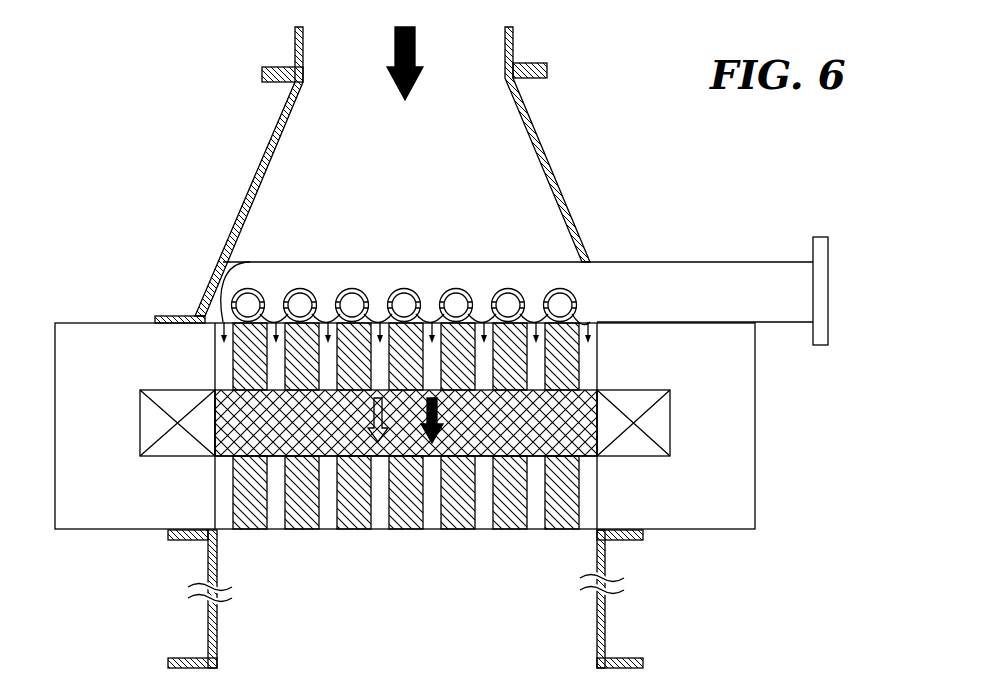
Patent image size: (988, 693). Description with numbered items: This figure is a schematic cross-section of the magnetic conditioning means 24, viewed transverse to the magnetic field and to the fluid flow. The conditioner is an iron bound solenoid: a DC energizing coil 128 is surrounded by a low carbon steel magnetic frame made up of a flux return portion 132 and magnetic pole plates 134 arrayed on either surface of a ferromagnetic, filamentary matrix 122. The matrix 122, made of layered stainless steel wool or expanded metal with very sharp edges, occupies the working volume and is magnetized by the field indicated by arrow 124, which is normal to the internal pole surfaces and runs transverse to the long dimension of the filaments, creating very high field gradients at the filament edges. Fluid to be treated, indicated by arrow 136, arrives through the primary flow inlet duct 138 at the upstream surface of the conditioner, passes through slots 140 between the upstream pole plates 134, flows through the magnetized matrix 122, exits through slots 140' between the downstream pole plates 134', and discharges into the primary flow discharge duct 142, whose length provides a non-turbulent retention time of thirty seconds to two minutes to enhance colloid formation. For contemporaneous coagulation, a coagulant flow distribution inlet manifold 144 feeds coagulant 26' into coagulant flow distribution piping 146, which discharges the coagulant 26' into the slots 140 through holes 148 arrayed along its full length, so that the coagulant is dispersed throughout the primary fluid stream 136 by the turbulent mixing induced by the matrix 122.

The magnetic conditioning means 24 is at (160, 280).
The coagulant 26' is at (554, 269).
The ferromagnetic filamentary matrix 122 is at (212, 440).
The magnetizing field 124 is at (457, 427).
The DC energizing coil 128 is at (140, 430).
The flux return portion 132 is at (72, 323).
The upstream pole plates 134 is at (456, 356).
The downstream pole plates 134' is at (406, 543).
The fluid to be treated 136 is at (415, 43).
The primary flow inlet duct 138 is at (530, 108).
The slots 140 is at (369, 352).
The slots 140' is at (276, 550).
The primary flow discharge duct 142 is at (605, 558).
The coagulant flow distribution inlet manifold 144 is at (713, 262).
The coagulant flow distribution piping 146 is at (550, 297).
The holes 148 is at (330, 310).